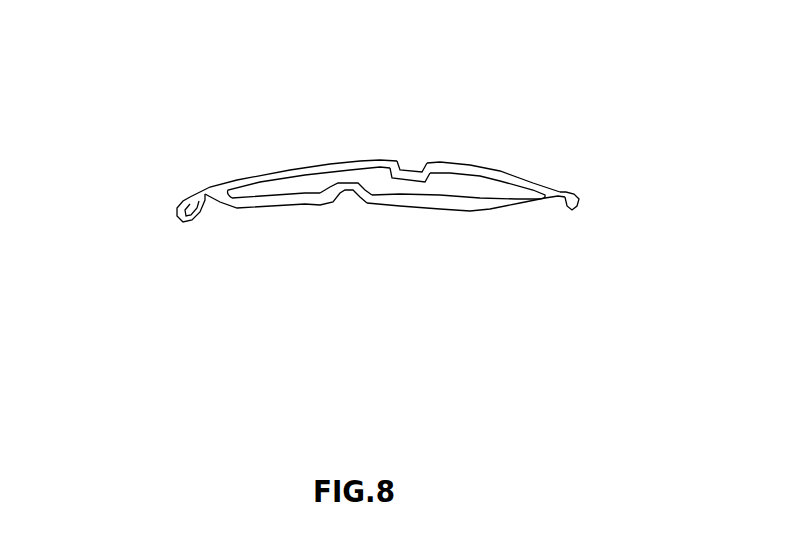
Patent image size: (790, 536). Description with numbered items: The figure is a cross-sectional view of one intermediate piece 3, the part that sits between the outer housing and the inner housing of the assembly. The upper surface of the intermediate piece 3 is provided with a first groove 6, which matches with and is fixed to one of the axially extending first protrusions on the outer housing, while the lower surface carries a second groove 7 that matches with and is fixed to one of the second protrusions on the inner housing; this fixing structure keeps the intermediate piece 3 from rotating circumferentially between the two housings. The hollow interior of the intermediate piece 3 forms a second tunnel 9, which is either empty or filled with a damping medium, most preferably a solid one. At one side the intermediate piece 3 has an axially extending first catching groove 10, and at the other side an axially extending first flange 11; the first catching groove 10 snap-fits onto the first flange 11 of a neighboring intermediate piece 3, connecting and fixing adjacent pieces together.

The intermediate piece 3 is at (497, 182).
The first groove 6 is at (405, 172).
The second groove 7 is at (348, 197).
The second tunnel 9 is at (463, 192).
The first catching groove 10 is at (187, 208).
The first flange 11 is at (572, 200).